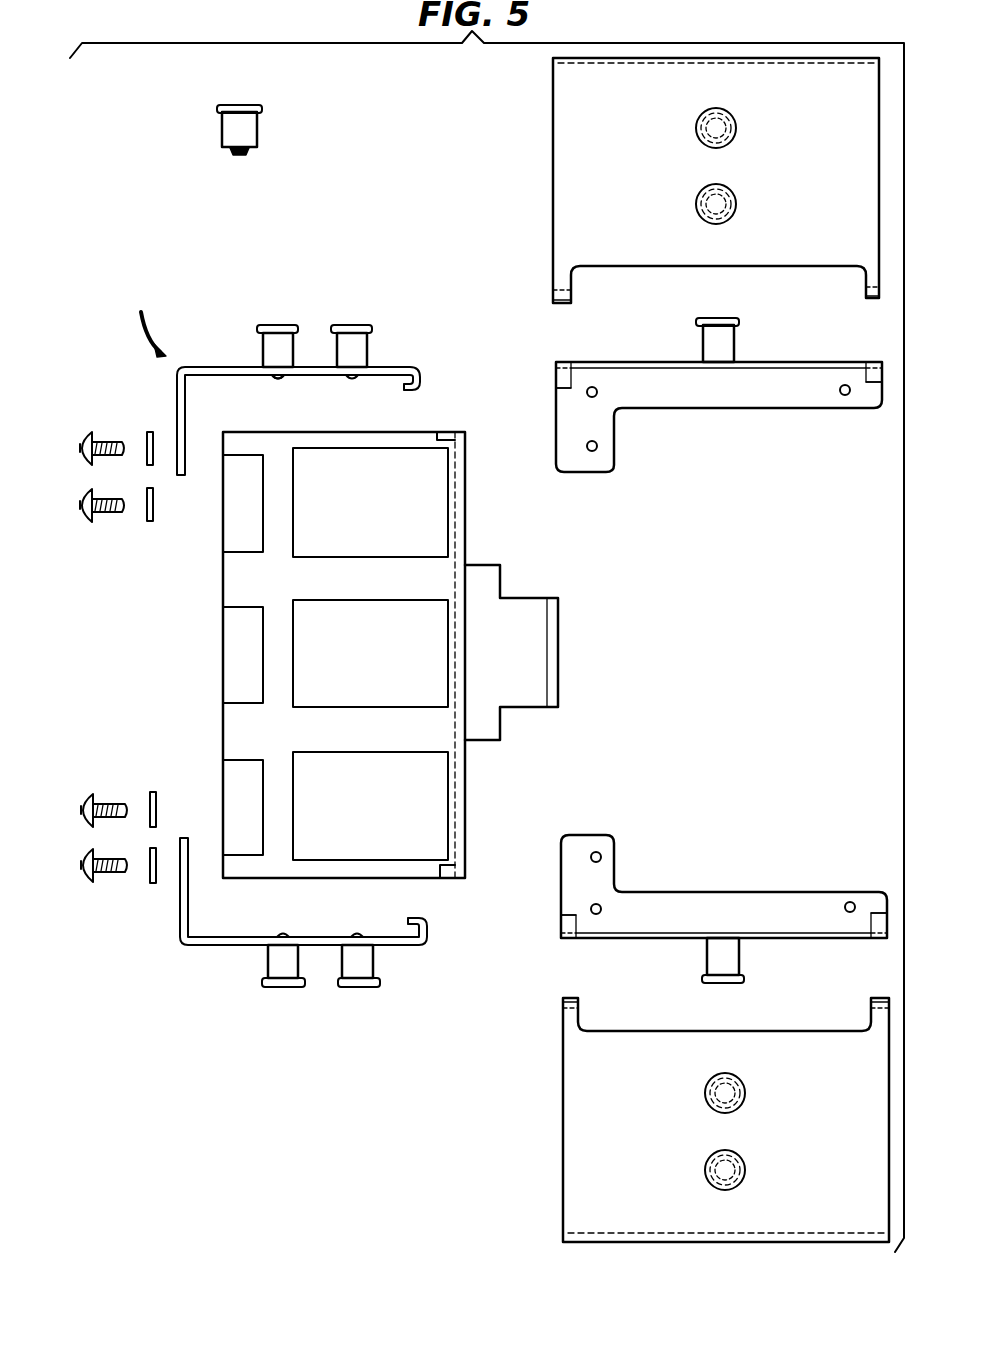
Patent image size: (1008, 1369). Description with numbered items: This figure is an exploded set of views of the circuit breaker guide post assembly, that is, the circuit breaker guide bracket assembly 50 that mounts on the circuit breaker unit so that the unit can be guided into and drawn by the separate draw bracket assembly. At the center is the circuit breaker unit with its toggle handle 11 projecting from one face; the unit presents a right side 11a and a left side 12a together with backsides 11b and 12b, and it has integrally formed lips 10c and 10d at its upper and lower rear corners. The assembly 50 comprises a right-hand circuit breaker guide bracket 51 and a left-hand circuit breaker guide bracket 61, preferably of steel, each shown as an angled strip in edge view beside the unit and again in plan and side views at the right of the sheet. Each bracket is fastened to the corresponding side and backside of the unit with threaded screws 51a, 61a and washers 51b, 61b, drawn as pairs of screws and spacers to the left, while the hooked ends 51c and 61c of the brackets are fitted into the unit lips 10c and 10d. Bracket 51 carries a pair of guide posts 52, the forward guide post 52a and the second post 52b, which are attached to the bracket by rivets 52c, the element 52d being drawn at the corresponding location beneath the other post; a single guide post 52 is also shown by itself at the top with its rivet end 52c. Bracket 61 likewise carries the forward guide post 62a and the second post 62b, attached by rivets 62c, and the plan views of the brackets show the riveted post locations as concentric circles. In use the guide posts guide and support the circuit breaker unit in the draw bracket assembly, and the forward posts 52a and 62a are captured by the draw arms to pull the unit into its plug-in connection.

The circuit breaker unit lip 10c is at (462, 438).
The circuit breaker unit lip 10d is at (465, 873).
The toggle handle 11 is at (555, 626).
The right side of circuit breaker unit 11a is at (300, 432).
The backside of circuit breaker unit 11b is at (225, 446).
The left side of circuit breaker unit 12a is at (335, 880).
The backside of circuit breaker unit 12b is at (225, 880).
The circuit breaker guide bracket assembly 50 is at (148, 323).
The right-hand circuit breaker guide bracket 51 is at (400, 361).
The threaded screw 51a is at (80, 440).
The washer 51b is at (150, 432).
The hooked end 51c is at (420, 382).
The guide post 52 is at (242, 108).
The forward guide post 52a is at (275, 328).
The second pin 52b is at (352, 328).
The rivet 52c is at (240, 156).
The pin flange 52d is at (280, 378).
The left-hand circuit breaker guide bracket 61 is at (405, 946).
The threaded screw 61a is at (80, 800).
The washer 61b is at (154, 792).
The hooked end 61c is at (428, 925).
The forward guide post 62a is at (283, 988).
The second lower pin 62b is at (357, 988).
The rivet 62c is at (283, 932).